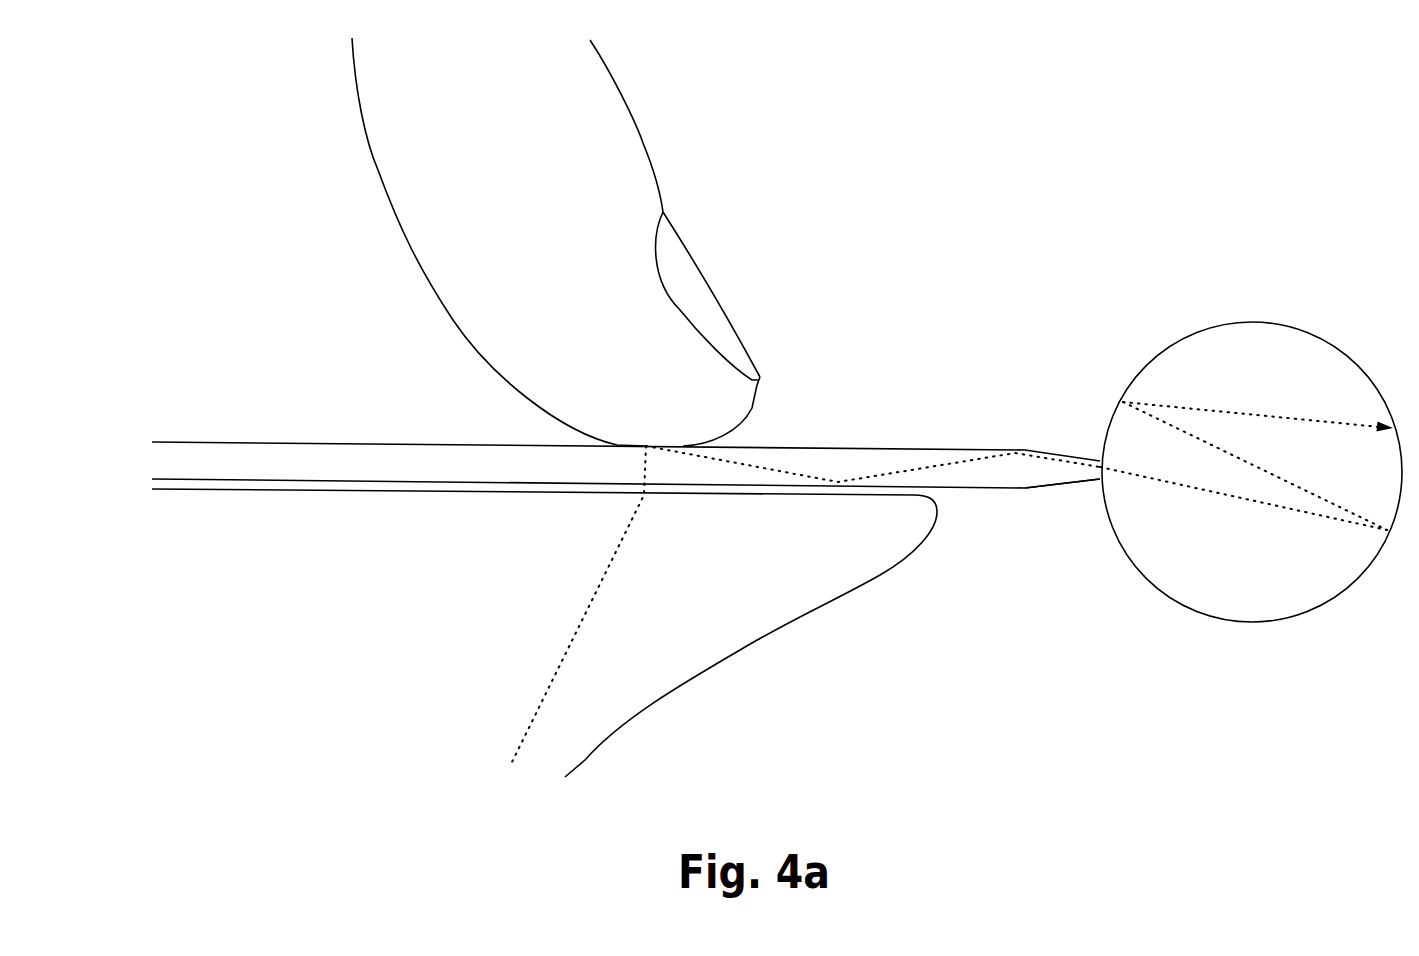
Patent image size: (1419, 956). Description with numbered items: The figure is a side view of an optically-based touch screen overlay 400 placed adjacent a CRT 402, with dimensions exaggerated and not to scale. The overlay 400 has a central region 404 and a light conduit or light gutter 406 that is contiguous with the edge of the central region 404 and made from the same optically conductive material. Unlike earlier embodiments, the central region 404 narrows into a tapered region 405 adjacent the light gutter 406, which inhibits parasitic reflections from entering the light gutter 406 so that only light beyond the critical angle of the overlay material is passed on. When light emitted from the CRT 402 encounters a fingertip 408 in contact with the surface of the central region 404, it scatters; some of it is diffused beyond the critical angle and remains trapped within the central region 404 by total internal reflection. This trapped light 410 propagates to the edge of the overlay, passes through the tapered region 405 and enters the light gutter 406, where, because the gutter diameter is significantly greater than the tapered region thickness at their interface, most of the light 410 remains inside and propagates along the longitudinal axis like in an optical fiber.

The optically-based touch screen overlay 400 is at (970, 190).
The CRT 402 is at (793, 627).
The central region 404 is at (930, 448).
The tapered region 405 is at (1077, 483).
The light gutter 406 is at (1168, 345).
The fingertip 408 is at (650, 163).
The trapped light 410 is at (1277, 508).